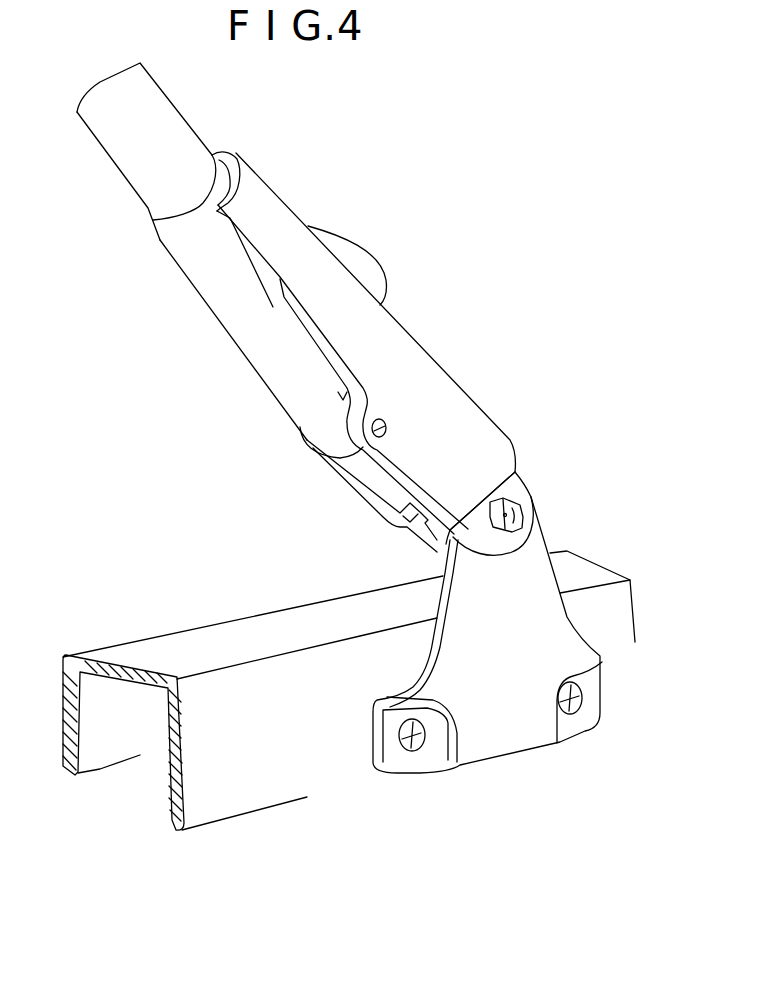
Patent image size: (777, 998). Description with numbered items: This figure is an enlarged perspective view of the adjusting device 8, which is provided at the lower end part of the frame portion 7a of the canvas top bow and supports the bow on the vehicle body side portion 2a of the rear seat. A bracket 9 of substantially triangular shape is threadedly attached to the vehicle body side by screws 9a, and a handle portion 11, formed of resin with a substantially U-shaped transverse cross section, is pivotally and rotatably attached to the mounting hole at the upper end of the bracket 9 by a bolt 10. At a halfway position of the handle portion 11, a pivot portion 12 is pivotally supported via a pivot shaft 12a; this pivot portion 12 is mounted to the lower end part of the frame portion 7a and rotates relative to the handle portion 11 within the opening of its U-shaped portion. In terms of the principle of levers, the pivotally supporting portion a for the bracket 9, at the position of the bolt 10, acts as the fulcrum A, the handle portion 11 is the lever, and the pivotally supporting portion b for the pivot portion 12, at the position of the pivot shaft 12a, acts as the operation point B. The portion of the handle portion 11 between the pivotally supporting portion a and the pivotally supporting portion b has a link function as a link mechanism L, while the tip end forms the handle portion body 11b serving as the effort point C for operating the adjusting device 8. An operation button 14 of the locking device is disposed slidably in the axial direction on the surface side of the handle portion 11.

The frame portion 7a is at (185, 121).
The effort point C is at (253, 186).
The handle portion 11 is at (430, 391).
The handle portion body 11b is at (288, 227).
The link mechanism L is at (440, 450).
The operation button 14 is at (368, 267).
The operation point B is at (382, 418).
The pivotally supporting portion b is at (378, 434).
The pivot portion 12 is at (237, 323).
The pivot shaft 12a is at (378, 440).
The pivotally supporting portion a is at (490, 517).
The adjusting device 8 is at (490, 447).
The fulcrum A is at (508, 512).
The bolt 10 is at (522, 527).
The bracket 9 is at (507, 737).
The screw 9a is at (580, 701).
The vehicle body side portion 2a is at (287, 790).